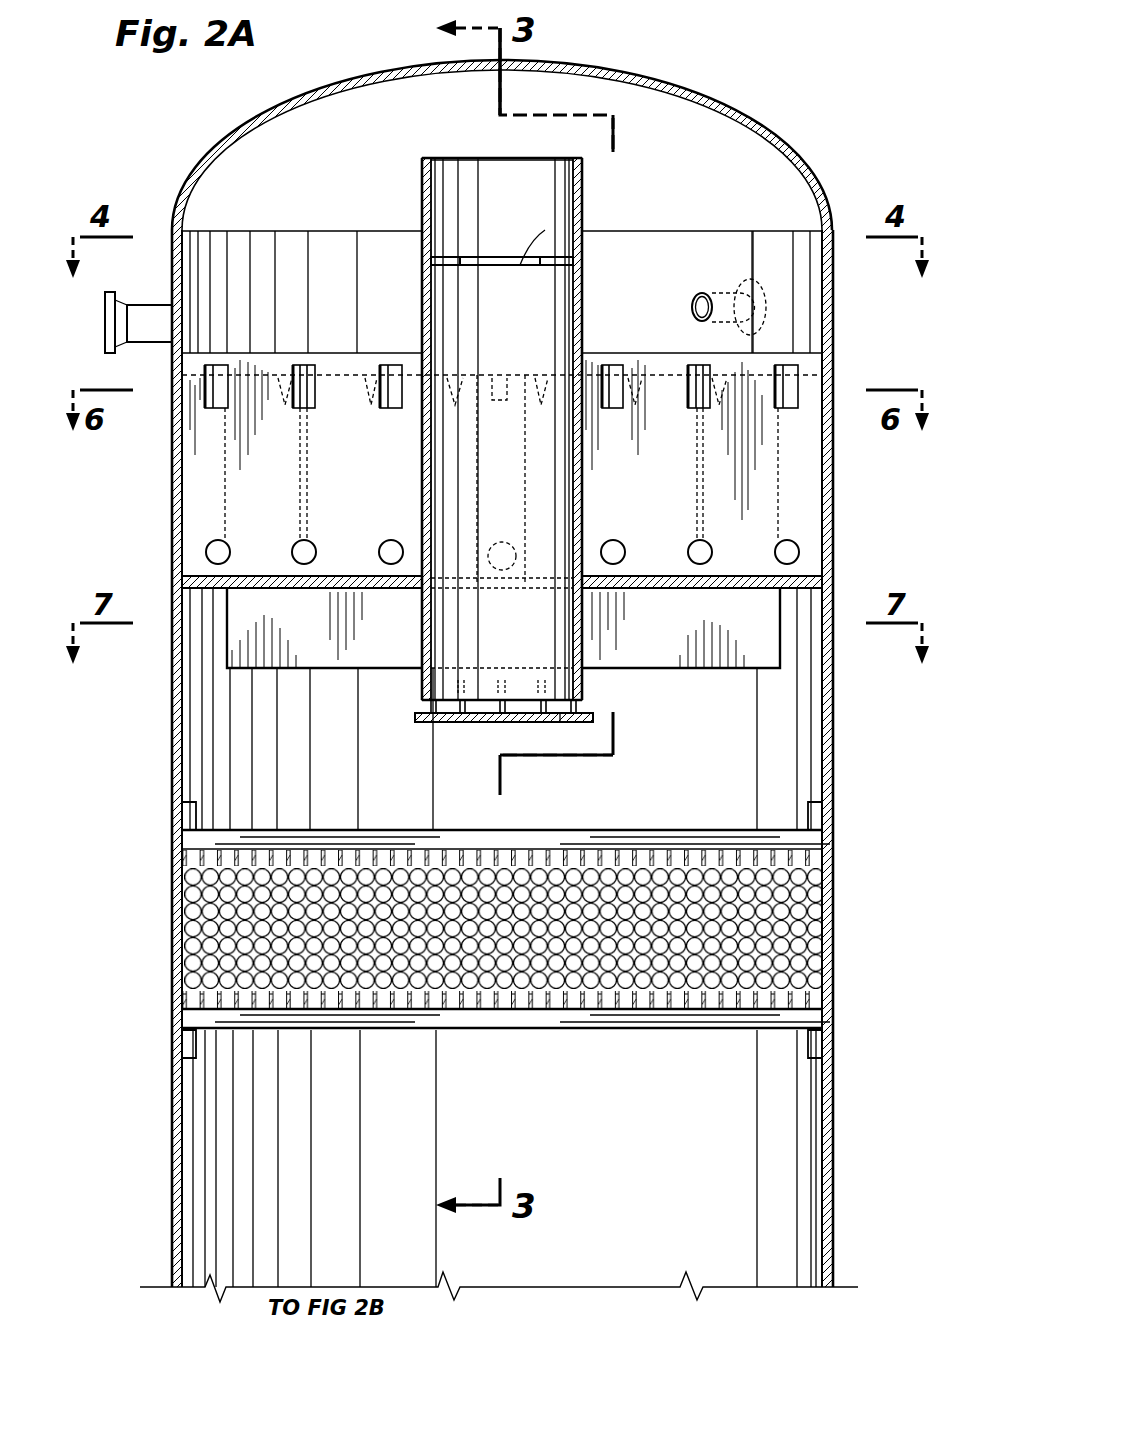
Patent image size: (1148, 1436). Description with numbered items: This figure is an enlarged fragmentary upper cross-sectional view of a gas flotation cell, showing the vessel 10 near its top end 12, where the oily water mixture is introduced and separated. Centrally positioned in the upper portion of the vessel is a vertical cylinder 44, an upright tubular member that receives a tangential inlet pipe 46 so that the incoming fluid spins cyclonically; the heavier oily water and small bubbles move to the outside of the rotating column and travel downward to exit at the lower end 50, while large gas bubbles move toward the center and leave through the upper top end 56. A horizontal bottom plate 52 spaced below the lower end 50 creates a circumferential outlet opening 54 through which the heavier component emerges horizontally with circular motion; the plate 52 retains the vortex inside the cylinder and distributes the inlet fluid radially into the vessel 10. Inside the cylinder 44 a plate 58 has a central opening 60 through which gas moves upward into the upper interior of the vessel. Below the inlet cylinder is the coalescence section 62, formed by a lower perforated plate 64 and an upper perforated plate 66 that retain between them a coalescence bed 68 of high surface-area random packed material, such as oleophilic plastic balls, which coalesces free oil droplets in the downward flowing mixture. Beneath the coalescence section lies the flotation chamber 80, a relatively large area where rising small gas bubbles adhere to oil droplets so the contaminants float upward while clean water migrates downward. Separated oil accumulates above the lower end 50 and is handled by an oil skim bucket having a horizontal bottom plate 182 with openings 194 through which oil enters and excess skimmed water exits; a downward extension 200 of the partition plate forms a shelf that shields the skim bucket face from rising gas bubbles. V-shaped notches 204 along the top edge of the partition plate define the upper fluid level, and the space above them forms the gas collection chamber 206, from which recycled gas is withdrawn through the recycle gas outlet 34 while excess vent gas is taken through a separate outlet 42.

The vessel 10 is at (834, 742).
The top end 12 is at (748, 112).
The recycle gas outlet 34 is at (760, 302).
The vent gas outlet 42 is at (105, 318).
The vertical cylinder 44 is at (584, 308).
The tangential inlet pipe 46 is at (150, 318).
The lower end 50 is at (462, 724).
The horizontal bottom plate 52 is at (492, 725).
The circumferential outlet opening 54 is at (544, 725).
The upper top end 56 is at (468, 157).
The plate 58 is at (460, 258).
The central opening 60 is at (535, 260).
The coalescence section 62 is at (848, 888).
The lower perforated plate 64 is at (657, 1032).
The upper perforated plate 66 is at (243, 822).
The coalescence bed 68 is at (783, 962).
The flotation chamber 80 is at (775, 1183).
The horizontal bottom plate 182 is at (694, 592).
The openings 194 is at (383, 545).
The downward extension 200 is at (698, 672).
The V-shaped notches 204 is at (368, 360).
The gas collection chamber 206 is at (352, 190).